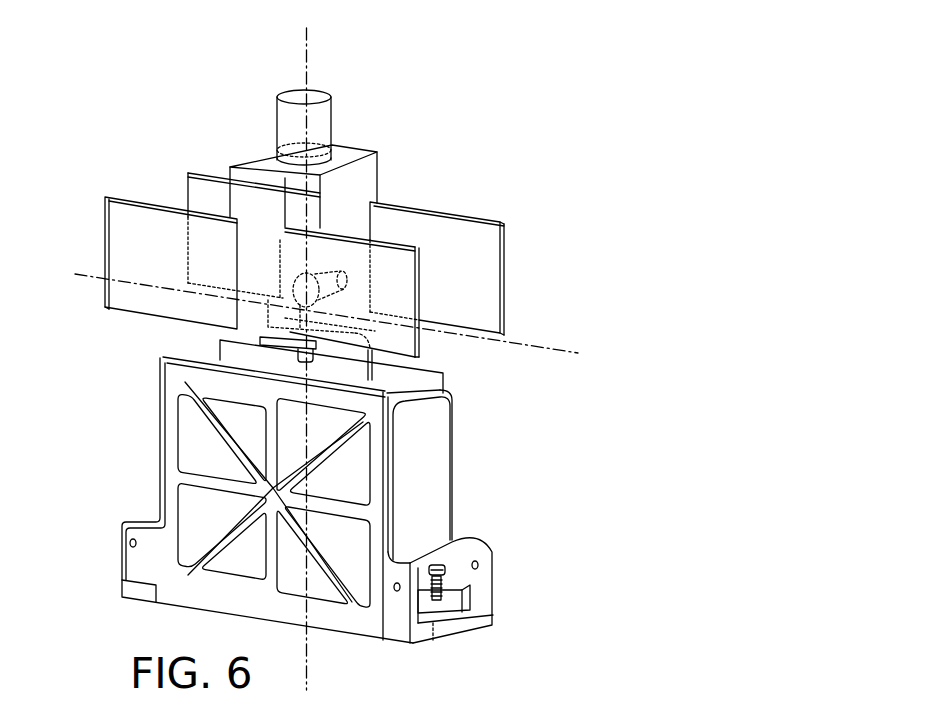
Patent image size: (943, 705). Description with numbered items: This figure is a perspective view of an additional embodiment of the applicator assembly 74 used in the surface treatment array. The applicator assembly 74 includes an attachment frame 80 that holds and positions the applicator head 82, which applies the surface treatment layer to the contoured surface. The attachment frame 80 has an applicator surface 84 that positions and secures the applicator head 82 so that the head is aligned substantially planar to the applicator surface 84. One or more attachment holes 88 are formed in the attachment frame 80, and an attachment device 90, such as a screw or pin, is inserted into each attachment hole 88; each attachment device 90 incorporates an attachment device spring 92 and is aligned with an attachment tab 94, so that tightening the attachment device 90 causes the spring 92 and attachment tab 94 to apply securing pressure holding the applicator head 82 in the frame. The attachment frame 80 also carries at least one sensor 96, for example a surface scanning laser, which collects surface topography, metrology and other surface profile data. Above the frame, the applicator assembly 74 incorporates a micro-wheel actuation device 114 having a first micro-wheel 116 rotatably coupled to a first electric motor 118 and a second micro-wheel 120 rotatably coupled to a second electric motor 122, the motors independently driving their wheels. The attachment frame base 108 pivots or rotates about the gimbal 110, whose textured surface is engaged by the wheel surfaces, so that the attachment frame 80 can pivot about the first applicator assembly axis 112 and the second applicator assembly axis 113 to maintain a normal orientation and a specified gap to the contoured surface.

The applicator assembly 74 is at (150, 85).
The attachment frame 80 is at (187, 597).
The applicator head 82 is at (438, 493).
The applicator surface 84 is at (440, 660).
The attachment hole 88 is at (450, 626).
The attachment device 90 is at (437, 568).
The attachment device spring 92 is at (446, 579).
The attachment tab 94 is at (452, 606).
The sensor 96 is at (152, 592).
The attachment frame base 108 is at (262, 318).
The gimbal 110 is at (318, 320).
The first applicator assembly axis 112 is at (307, 52).
The second applicator assembly axis 113 is at (546, 348).
The micro-wheel actuation device 114 is at (257, 170).
The first micro-wheel 116 is at (252, 338).
The first electric motor 118 is at (257, 307).
The second micro-wheel 120 is at (310, 283).
The second electric motor 122 is at (340, 273).